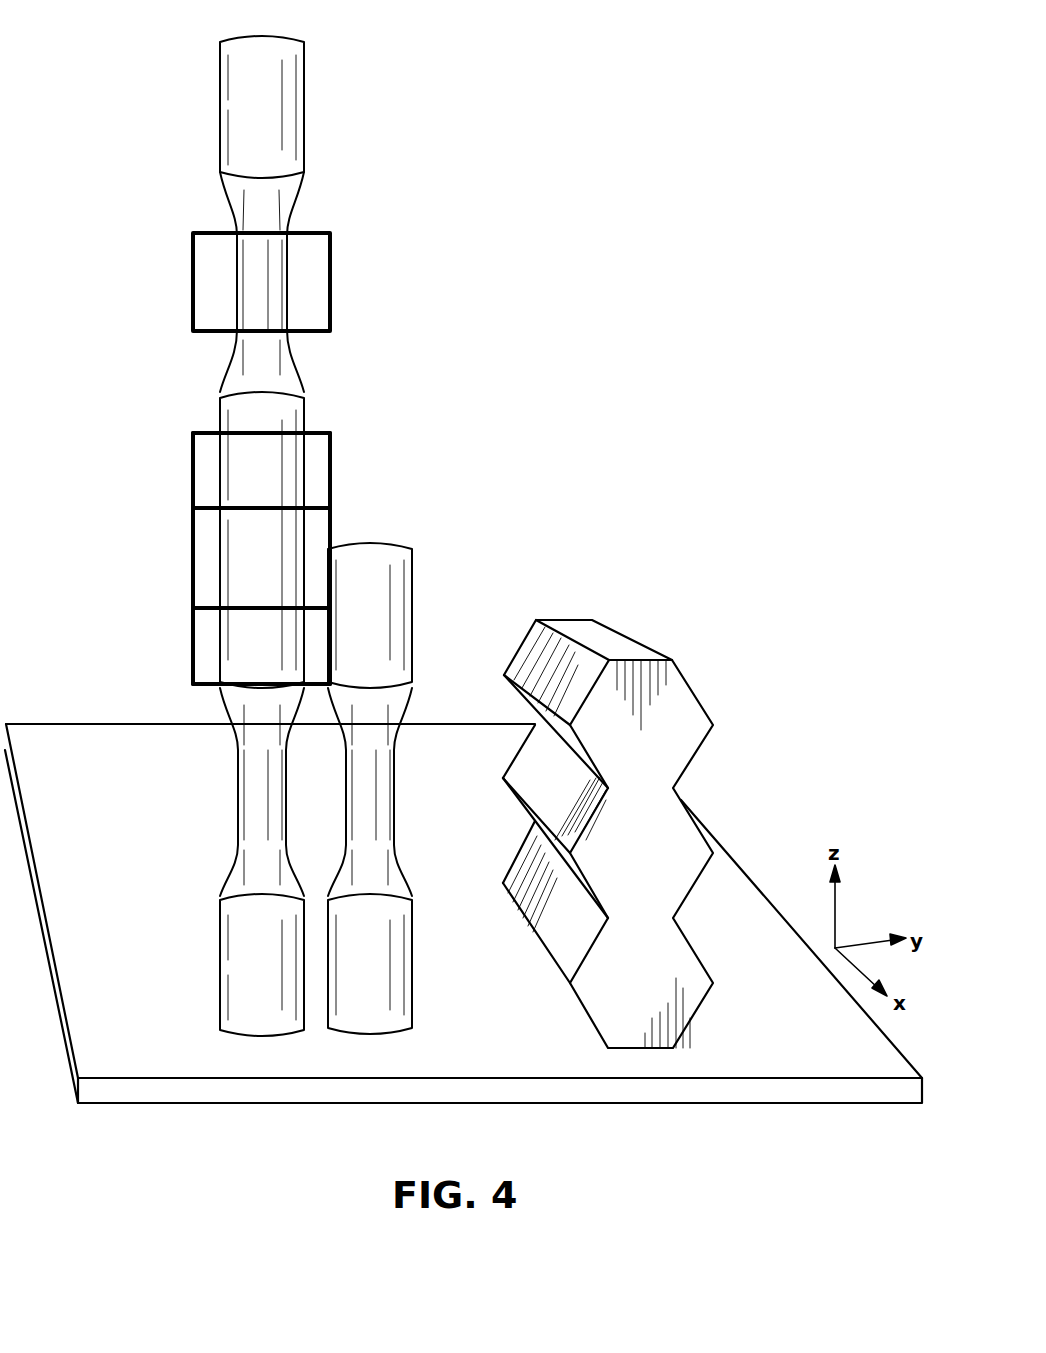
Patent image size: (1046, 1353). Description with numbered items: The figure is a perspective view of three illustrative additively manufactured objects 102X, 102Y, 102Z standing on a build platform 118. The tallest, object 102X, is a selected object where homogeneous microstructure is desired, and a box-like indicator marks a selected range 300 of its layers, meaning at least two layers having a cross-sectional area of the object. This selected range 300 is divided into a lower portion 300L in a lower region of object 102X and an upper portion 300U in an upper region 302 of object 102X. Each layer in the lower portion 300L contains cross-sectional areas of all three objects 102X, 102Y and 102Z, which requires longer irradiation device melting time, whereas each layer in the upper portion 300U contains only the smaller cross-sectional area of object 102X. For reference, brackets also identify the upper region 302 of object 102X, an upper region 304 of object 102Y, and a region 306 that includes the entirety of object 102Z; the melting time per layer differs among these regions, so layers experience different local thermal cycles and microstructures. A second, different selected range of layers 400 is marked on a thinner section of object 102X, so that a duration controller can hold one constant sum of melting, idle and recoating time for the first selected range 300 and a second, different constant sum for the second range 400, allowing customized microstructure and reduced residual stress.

The object 102X is at (258, 137).
The object 102Y is at (373, 975).
The object 102Z is at (645, 798).
The build platform 118 is at (813, 1062).
The selected range of layers 300 is at (193, 556).
The upper portion 300U is at (203, 468).
The lower portion 300L is at (203, 641).
The upper region 302 is at (338, 32).
The upper region 304 is at (434, 541).
The region 306 is at (563, 655).
The second selected range of layers 400 is at (193, 273).